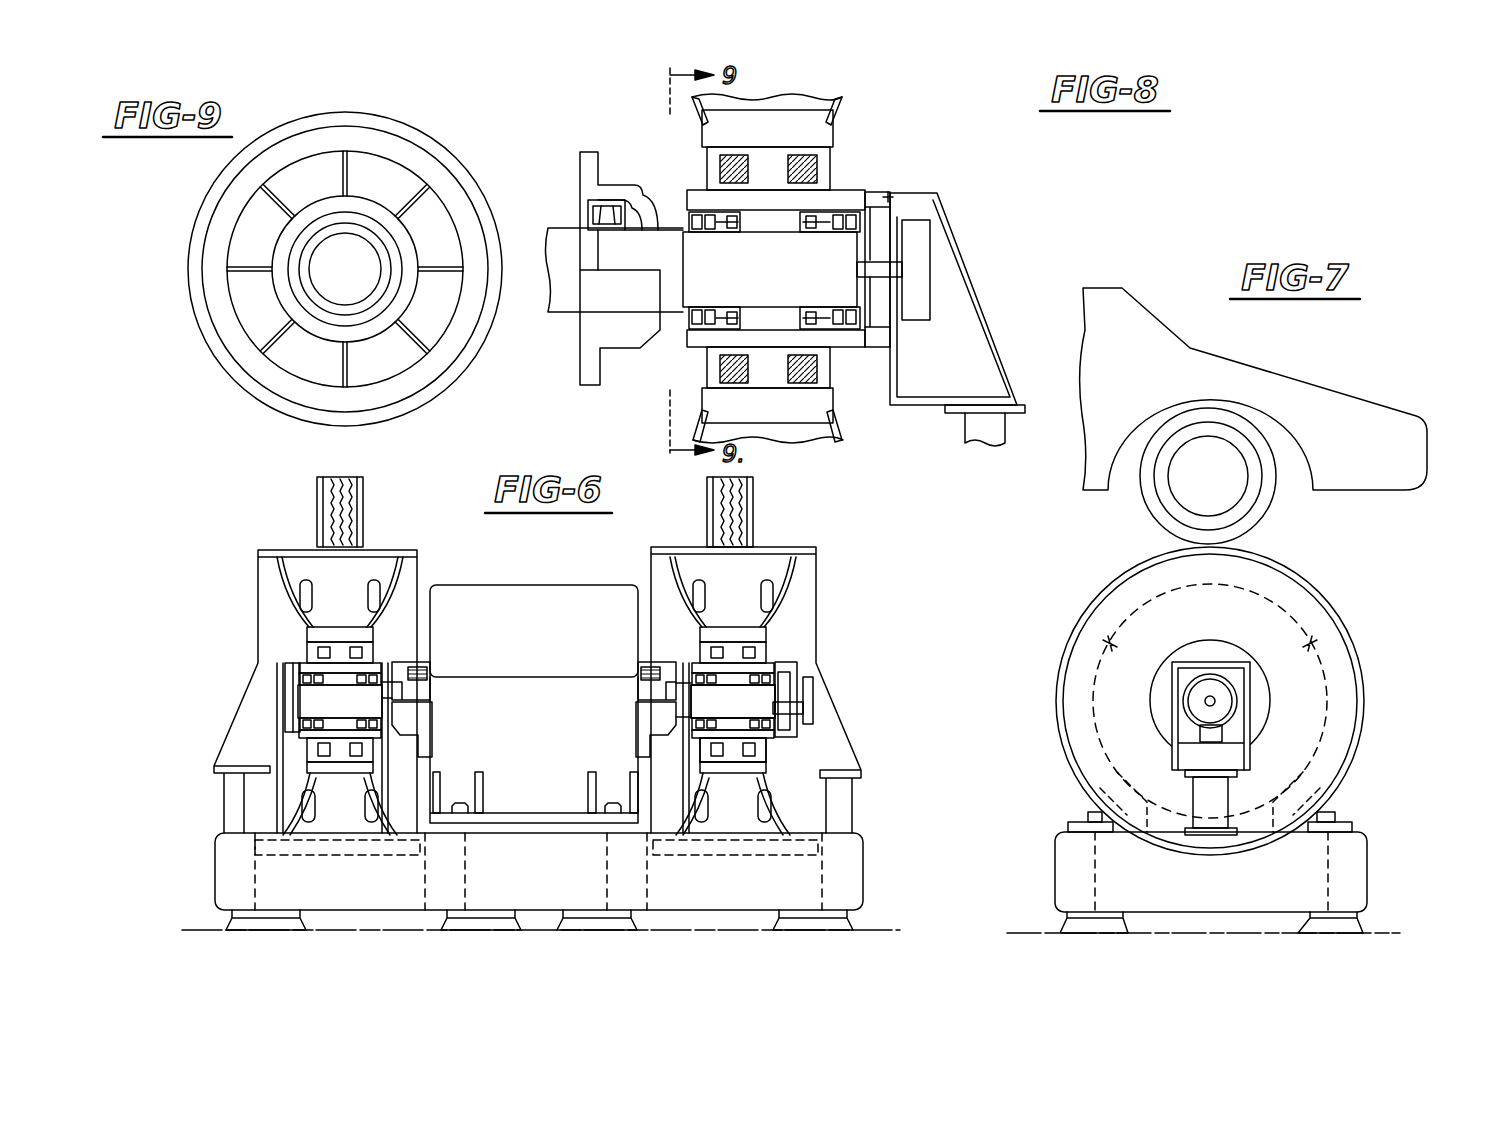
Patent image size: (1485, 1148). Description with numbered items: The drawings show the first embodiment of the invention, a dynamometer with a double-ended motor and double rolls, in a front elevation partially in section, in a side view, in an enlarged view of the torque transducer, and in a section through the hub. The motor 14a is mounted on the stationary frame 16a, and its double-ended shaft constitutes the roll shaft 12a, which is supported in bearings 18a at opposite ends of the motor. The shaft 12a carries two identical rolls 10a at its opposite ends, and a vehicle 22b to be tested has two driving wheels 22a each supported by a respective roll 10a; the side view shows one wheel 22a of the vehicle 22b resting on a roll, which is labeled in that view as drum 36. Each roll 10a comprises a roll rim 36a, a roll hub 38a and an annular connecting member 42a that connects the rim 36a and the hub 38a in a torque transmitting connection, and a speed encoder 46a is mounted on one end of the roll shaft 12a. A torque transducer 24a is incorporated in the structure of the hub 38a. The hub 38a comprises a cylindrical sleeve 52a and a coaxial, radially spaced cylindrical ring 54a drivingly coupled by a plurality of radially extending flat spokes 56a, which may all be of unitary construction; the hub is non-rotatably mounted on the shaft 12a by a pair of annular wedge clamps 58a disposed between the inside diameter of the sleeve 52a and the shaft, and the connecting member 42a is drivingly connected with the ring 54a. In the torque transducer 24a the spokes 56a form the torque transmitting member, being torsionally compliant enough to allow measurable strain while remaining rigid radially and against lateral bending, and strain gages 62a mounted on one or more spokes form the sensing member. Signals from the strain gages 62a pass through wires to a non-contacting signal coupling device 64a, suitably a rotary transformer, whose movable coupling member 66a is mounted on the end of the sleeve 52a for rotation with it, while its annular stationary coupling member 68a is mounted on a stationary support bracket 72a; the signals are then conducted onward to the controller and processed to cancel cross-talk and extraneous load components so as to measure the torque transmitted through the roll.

In FIG. 7, the roll 10a is at (1193, 737).
In FIG. 6, the roll 10a is at (531, 703).
In FIG. 8, the roll shaft 12a is at (768, 261).
In FIG. 6, the roll shaft 12a is at (812, 722).
In FIG. 6, the motor 14a is at (498, 638).
In FIG. 7, the stationary frame 16a is at (1040, 868).
In FIG. 6, the stationary frame 16a is at (196, 868).
In FIG. 6, the bearings 18a is at (396, 665).
In FIG. 7, the driving wheels 22a is at (1253, 537).
In FIG. 6, the driving wheels 22a is at (362, 520).
In FIG. 7, the vehicle 22b is at (1355, 397).
In FIG. 8, the torque transducer 24a is at (954, 234).
In FIG. 6, the torque transducer 24a is at (789, 650).
In FIG. 7, the drum 36 is at (1082, 615).
In FIG. 6, the roll rim 36a is at (258, 550).
In FIG. 8, the roll hub 38a is at (757, 257).
In FIG. 6, the roll hub 38a is at (751, 715).
In FIG. 8, the annular connecting member 42a is at (846, 104).
In FIG. 6, the annular connecting member 42a is at (795, 603).
In FIG. 8, the speed encoder 46a is at (925, 300).
In FIG. 7, the speed encoder 46a is at (1227, 700).
In FIG. 6, the speed encoder 46a is at (766, 712).
In FIG. 9, the cylindrical sleeve 52a is at (408, 302).
In FIG. 8, the cylindrical sleeve 52a is at (692, 348).
In FIG. 6, the cylindrical sleeve 52a is at (692, 748).
In FIG. 9, the cylindrical ring 54a is at (220, 320).
In FIG. 8, the cylindrical ring 54a is at (803, 120).
In FIG. 6, the cylindrical ring 54a is at (733, 630).
In FIG. 9, the spokes 56a is at (443, 253).
In FIG. 8, the spokes 56a is at (840, 165).
In FIG. 8, the annular wedge clamps 58a is at (792, 310).
In FIG. 8, the strain gages 62a is at (795, 158).
In FIG. 8, the non-contacting signal coupling device 64a is at (892, 188).
In FIG. 8, the movable coupling member 66a is at (880, 262).
In FIG. 8, the stationary coupling member 68a is at (880, 233).
In FIG. 8, the stationary support bracket 72a is at (963, 368).
In FIG. 7, the stationary support bracket 72a is at (1172, 757).